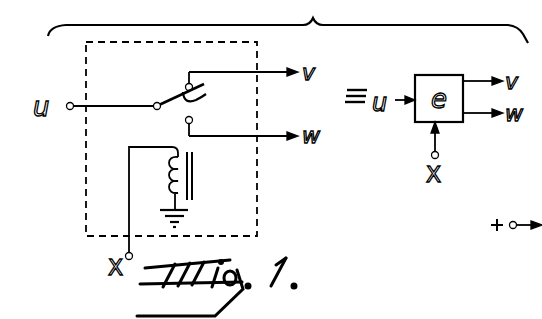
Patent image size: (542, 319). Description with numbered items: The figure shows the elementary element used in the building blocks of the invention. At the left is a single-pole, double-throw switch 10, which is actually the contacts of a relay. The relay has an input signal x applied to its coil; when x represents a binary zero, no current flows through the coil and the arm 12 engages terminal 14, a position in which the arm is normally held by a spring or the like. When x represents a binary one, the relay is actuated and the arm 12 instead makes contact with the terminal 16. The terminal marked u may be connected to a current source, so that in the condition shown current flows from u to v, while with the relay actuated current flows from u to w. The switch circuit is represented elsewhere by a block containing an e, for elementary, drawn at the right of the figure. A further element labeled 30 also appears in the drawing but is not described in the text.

The single-pole, double-throw switch 10 is at (171, 95).
The arm 12 is at (211, 93).
The terminal 14 is at (184, 80).
The terminal 16 is at (192, 120).
The positive supply terminal 30 is at (515, 221).